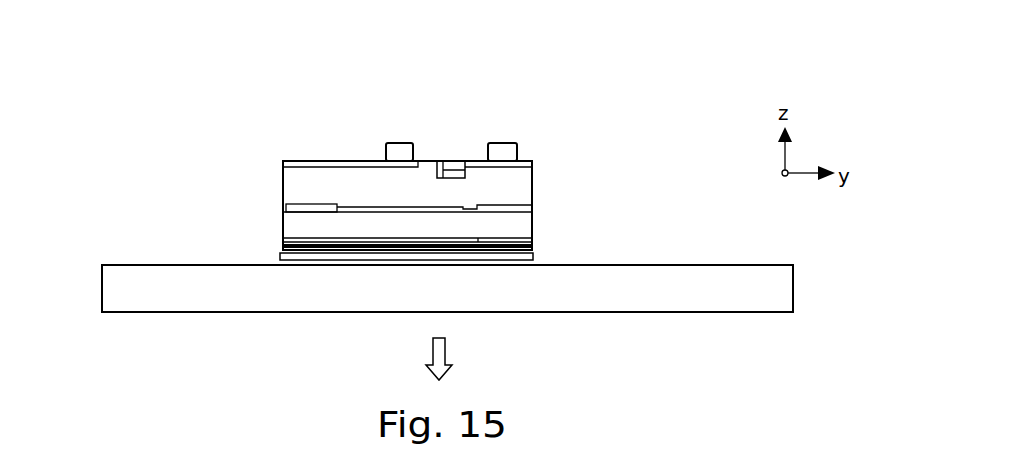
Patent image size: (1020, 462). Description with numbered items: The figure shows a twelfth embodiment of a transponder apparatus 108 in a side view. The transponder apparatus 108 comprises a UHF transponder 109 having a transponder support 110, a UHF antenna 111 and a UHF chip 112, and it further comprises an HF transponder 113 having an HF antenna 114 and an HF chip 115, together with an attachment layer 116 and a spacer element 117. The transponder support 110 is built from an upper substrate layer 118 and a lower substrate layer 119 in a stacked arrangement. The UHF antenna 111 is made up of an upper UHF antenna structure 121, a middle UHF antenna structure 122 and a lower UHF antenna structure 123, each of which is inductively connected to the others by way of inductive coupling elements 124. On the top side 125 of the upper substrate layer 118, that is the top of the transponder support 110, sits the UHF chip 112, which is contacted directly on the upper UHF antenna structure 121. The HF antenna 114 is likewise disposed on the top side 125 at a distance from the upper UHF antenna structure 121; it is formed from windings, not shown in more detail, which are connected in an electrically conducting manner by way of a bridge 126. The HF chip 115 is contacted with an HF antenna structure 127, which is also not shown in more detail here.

The transponder apparatus 108 is at (122, 108).
The UHF transponder 109 is at (350, 123).
The transponder support 110 is at (280, 172).
The UHF antenna 111 is at (331, 157).
The UHF chip 112 is at (400, 148).
The HF transponder 113 is at (503, 115).
The HF antenna 114 is at (532, 157).
The HF chip 115 is at (497, 152).
The attachment layer 116 is at (533, 260).
The spacer element 117 is at (778, 285).
The upper substrate layer 118 is at (290, 197).
The lower substrate layer 119 is at (303, 231).
The upper UHF antenna structure 121 is at (355, 160).
The middle UHF antenna structure 122 is at (467, 204).
The lower UHF antenna structure 123 is at (335, 255).
The inductive coupling elements 124 is at (303, 160).
The top side 125 is at (433, 158).
The bridge 126 is at (450, 164).
The HF antenna structure 127 is at (480, 158).